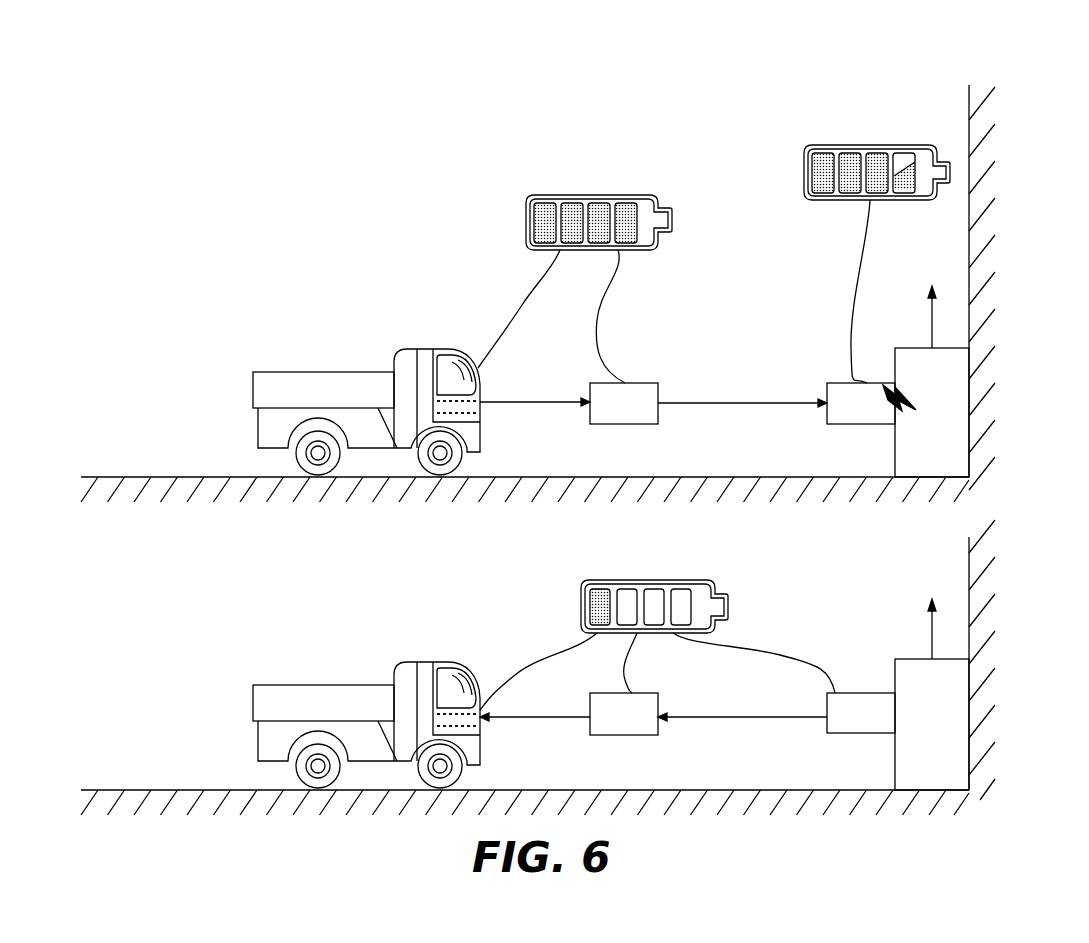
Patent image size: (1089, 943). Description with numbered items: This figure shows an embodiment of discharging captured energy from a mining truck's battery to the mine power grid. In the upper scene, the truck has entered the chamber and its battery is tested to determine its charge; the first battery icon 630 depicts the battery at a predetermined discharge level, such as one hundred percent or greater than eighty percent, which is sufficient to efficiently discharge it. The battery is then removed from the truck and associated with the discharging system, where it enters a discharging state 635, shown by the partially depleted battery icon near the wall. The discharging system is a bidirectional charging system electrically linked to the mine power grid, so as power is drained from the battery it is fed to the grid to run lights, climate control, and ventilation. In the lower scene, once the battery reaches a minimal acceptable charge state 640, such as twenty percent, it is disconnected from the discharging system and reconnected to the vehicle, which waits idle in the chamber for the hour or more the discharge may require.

The fully charged vehicle battery state 630 is at (598, 195).
The discharging state 635 is at (888, 145).
The minimal acceptable charge state 640 is at (670, 580).